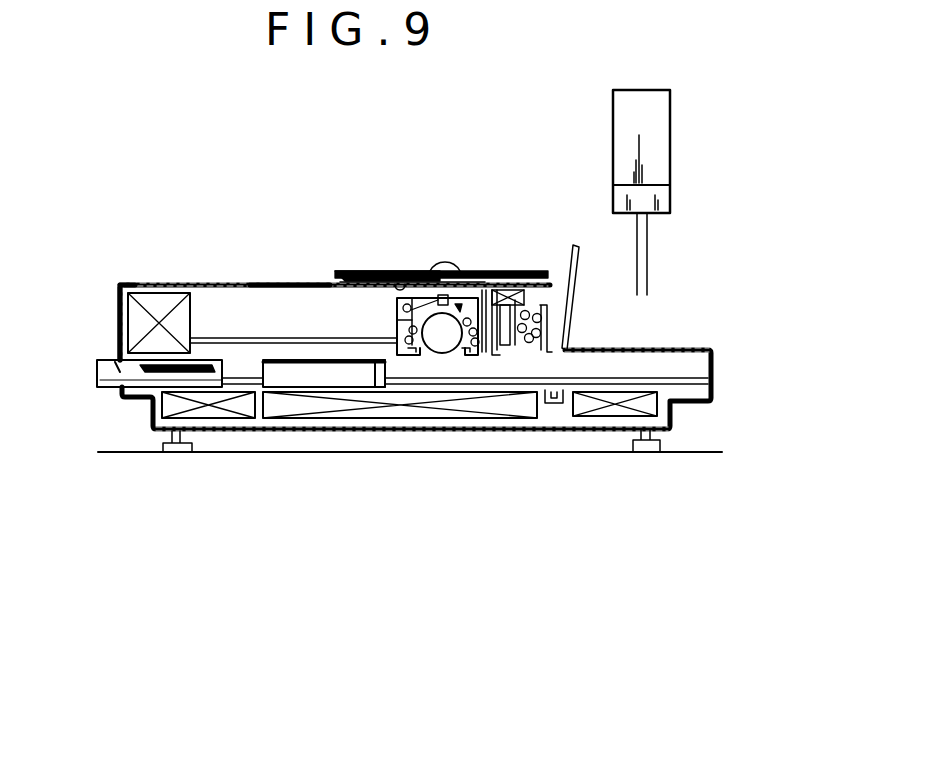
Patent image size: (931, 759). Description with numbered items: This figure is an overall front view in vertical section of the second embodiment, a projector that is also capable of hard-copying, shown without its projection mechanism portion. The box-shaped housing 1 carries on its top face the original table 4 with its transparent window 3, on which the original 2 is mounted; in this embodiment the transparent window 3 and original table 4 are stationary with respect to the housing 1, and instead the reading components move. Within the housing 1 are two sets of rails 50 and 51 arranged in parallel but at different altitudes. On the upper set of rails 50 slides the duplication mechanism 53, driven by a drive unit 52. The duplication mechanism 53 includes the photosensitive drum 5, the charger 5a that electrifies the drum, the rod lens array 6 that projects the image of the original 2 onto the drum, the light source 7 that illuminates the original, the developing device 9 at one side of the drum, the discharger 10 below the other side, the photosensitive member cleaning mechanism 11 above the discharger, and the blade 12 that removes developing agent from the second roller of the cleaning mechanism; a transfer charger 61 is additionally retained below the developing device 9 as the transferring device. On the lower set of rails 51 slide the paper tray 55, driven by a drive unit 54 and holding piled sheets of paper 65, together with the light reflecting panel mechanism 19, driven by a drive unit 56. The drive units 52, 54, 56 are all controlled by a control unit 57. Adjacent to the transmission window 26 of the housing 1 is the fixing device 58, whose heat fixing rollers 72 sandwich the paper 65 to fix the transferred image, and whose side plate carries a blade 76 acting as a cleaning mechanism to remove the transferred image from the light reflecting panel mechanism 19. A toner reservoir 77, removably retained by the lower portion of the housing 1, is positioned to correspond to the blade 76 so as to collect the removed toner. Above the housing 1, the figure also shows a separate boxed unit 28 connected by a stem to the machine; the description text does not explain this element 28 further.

The housing 1 is at (113, 288).
The original 2 is at (352, 271).
The transparent window 3 is at (376, 282).
The original table 4 is at (283, 287).
The photosensitive drum 5 is at (442, 345).
The charger 5a is at (468, 318).
The rod lens array 6 is at (444, 295).
The light source 7 is at (398, 284).
The developing device 9 is at (395, 322).
The discharger 10 is at (470, 350).
The photosensitive member cleaning mechanism 11 is at (486, 290).
The blade 12 is at (490, 357).
The light reflecting panel mechanism 19 is at (287, 382).
The transmission window 26 is at (678, 348).
The control unit 28 is at (620, 152).
The rails 50 is at (207, 338).
The rails 51 is at (246, 377).
The drive unit 52 is at (150, 305).
The duplication mechanism 53 is at (418, 298).
The drive unit 54 is at (208, 412).
The paper tray 55 is at (98, 366).
The drive unit 56 is at (617, 408).
The control unit 57 is at (504, 405).
The fixing device 58 is at (512, 292).
The transfer charger 61 is at (413, 352).
The paper 65 is at (120, 363).
The heat fixing rollers 72 is at (548, 335).
The blade 76 is at (530, 333).
The toner reservoir 77 is at (555, 404).